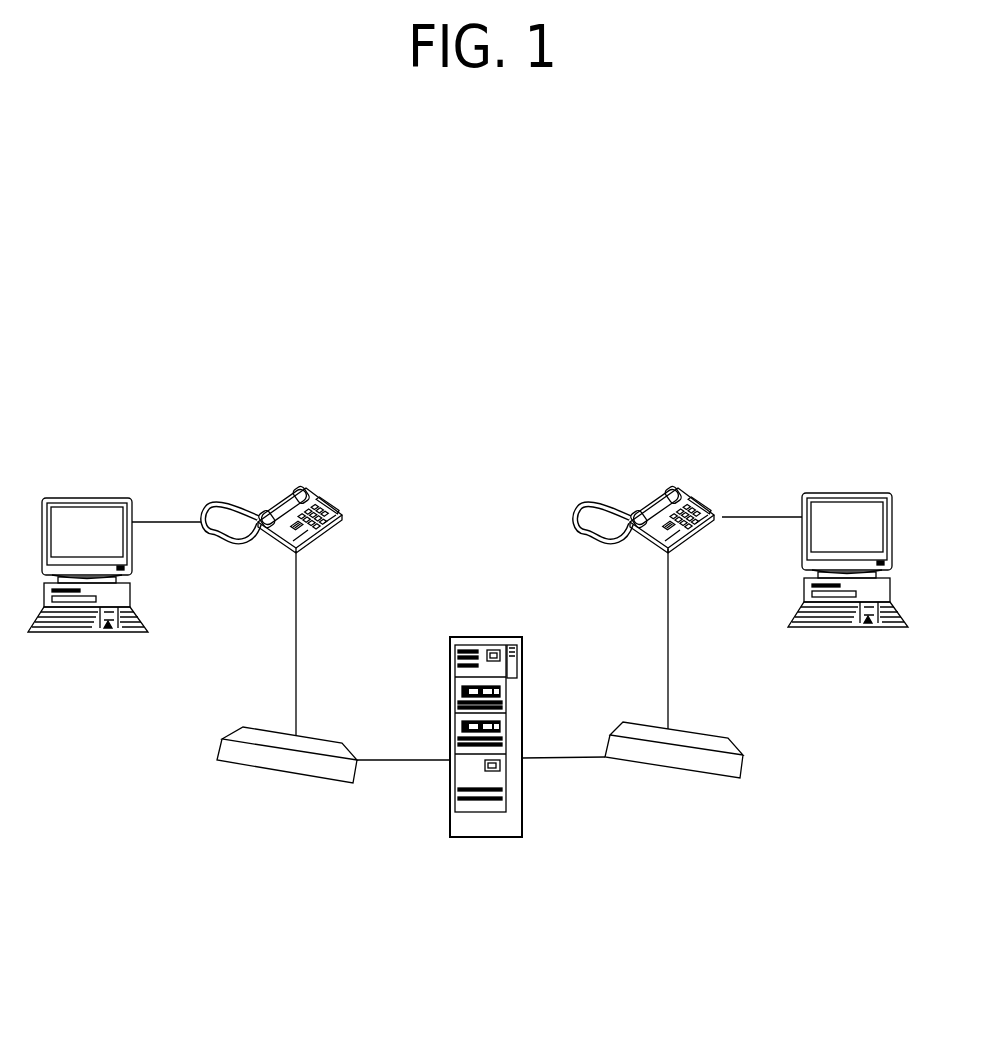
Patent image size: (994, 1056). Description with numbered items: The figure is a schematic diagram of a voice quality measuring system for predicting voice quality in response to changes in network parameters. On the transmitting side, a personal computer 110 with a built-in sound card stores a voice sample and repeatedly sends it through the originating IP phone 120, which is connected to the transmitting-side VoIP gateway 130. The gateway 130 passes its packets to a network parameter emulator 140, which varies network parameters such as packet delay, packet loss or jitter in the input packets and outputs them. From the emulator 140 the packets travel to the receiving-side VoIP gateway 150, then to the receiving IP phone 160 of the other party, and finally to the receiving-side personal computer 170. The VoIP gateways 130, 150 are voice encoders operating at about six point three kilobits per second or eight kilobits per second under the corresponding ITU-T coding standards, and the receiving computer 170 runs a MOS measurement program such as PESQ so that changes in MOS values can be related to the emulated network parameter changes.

The personal computer of the transmitting side 110 is at (95, 515).
The IP phone of the originating side 120 is at (290, 488).
The VoIP gateway of the transmitting side 130 is at (326, 738).
The network parameter emulator 140 is at (484, 637).
The VoIP gateway of the receiving side 150 is at (700, 735).
The IP phone of the receiving side 160 is at (668, 485).
The personal computer of the receiving side 170 is at (848, 554).